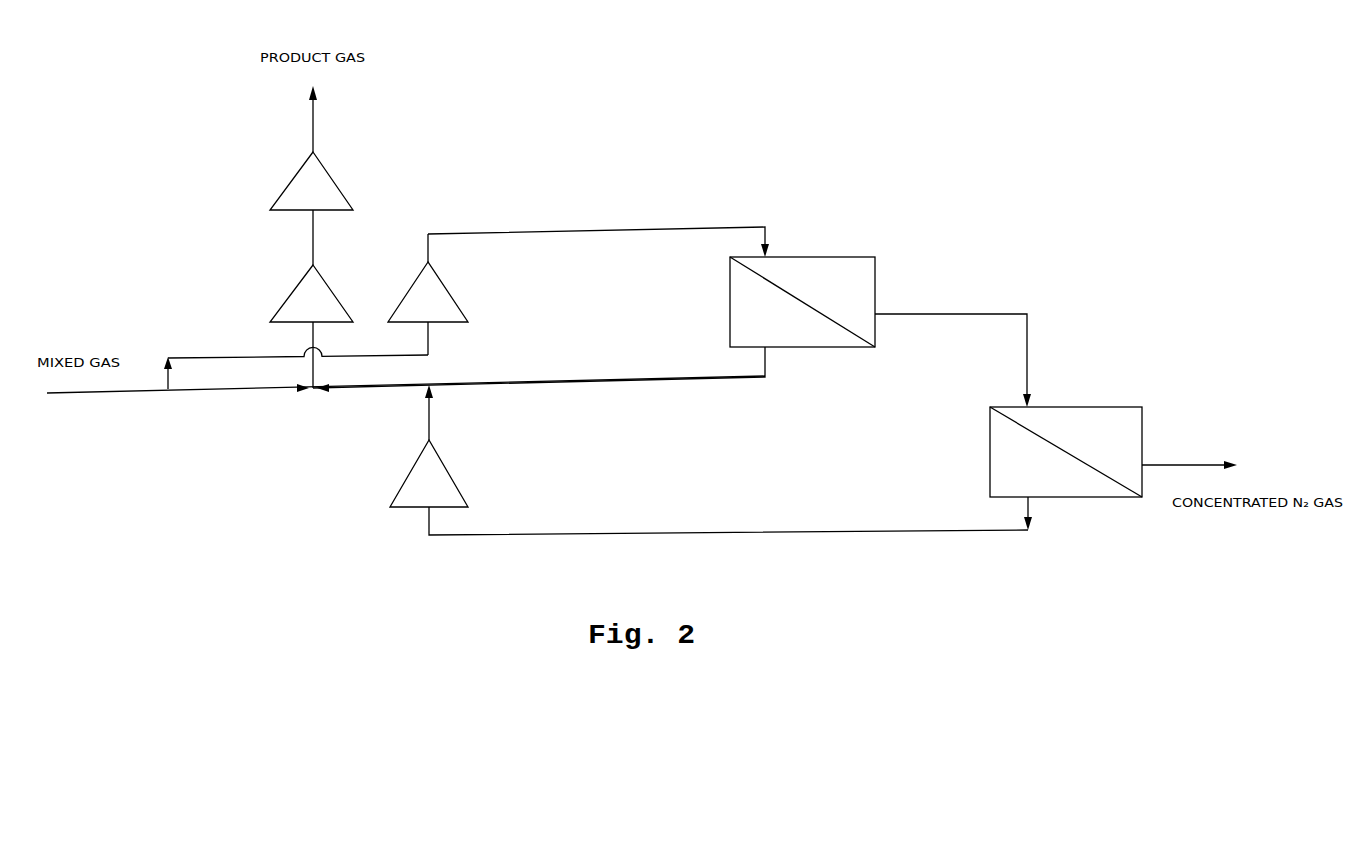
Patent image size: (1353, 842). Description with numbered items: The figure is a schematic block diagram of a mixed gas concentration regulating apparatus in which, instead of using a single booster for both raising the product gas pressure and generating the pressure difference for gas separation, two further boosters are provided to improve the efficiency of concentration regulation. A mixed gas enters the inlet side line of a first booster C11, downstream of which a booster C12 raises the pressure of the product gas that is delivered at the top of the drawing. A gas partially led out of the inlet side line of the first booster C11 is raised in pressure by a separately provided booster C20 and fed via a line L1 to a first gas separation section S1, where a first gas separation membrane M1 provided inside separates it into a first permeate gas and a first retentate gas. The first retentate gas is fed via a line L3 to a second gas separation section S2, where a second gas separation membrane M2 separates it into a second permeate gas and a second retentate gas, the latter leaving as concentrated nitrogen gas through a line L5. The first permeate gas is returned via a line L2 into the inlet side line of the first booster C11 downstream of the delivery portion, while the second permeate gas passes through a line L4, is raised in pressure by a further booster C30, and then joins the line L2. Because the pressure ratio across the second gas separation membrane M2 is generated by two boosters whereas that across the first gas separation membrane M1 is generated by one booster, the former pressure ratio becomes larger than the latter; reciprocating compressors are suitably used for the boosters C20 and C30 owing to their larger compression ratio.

The booster C12 is at (293, 183).
The first booster C11 is at (290, 293).
The booster C20 is at (461, 312).
The booster C30 is at (452, 467).
The first gas separation section S1 is at (820, 257).
The second gas separation section S2 is at (1108, 407).
The first gas separation membrane M1 is at (838, 325).
The second gas separation membrane M2 is at (1105, 475).
The line L1 is at (598, 229).
The line L2 is at (539, 367).
The line L3 is at (953, 345).
The line L4 is at (730, 516).
The line L5 is at (1189, 451).